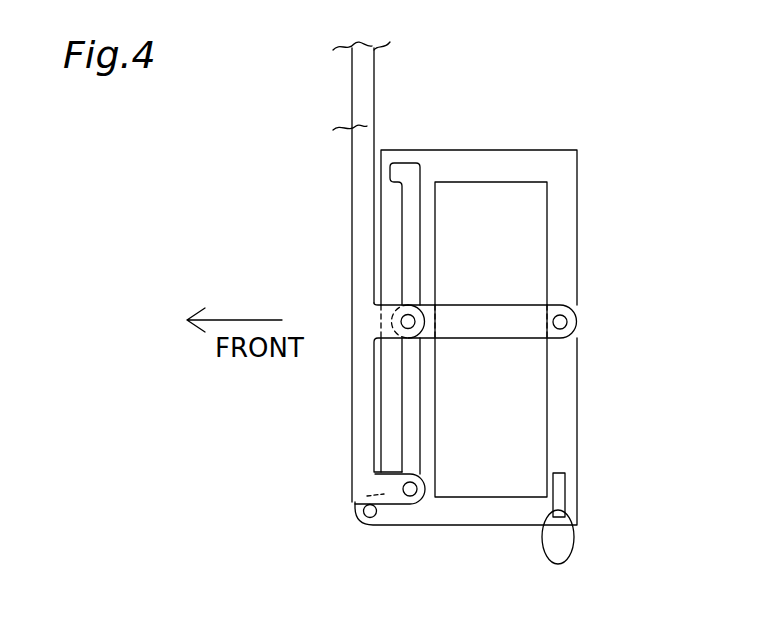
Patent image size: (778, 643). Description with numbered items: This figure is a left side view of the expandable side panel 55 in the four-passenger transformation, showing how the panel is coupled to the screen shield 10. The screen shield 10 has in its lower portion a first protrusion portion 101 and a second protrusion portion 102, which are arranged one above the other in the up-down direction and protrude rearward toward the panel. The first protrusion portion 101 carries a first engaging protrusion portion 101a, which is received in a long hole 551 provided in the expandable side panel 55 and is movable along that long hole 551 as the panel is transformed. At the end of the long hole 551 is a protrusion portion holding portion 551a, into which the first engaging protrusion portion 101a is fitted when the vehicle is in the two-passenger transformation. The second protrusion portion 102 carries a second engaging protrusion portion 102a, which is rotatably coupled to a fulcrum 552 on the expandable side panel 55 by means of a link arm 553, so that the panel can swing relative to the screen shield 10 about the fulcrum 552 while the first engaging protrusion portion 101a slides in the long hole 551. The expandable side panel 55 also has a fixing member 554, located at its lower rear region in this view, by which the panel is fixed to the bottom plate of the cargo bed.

The screen shield 10 is at (362, 130).
The expandable side panel 55 is at (505, 327).
The long hole 551 is at (415, 193).
The protrusion portion holding portion 551a is at (391, 162).
The fulcrum 552 is at (565, 326).
The link arm 553 is at (473, 323).
The fixing member 554 is at (574, 542).
The first protrusion portion 101 is at (383, 483).
The first engaging protrusion portion 101a is at (413, 504).
The second protrusion portion 102 is at (380, 320).
The second engaging protrusion portion 102a is at (403, 310).